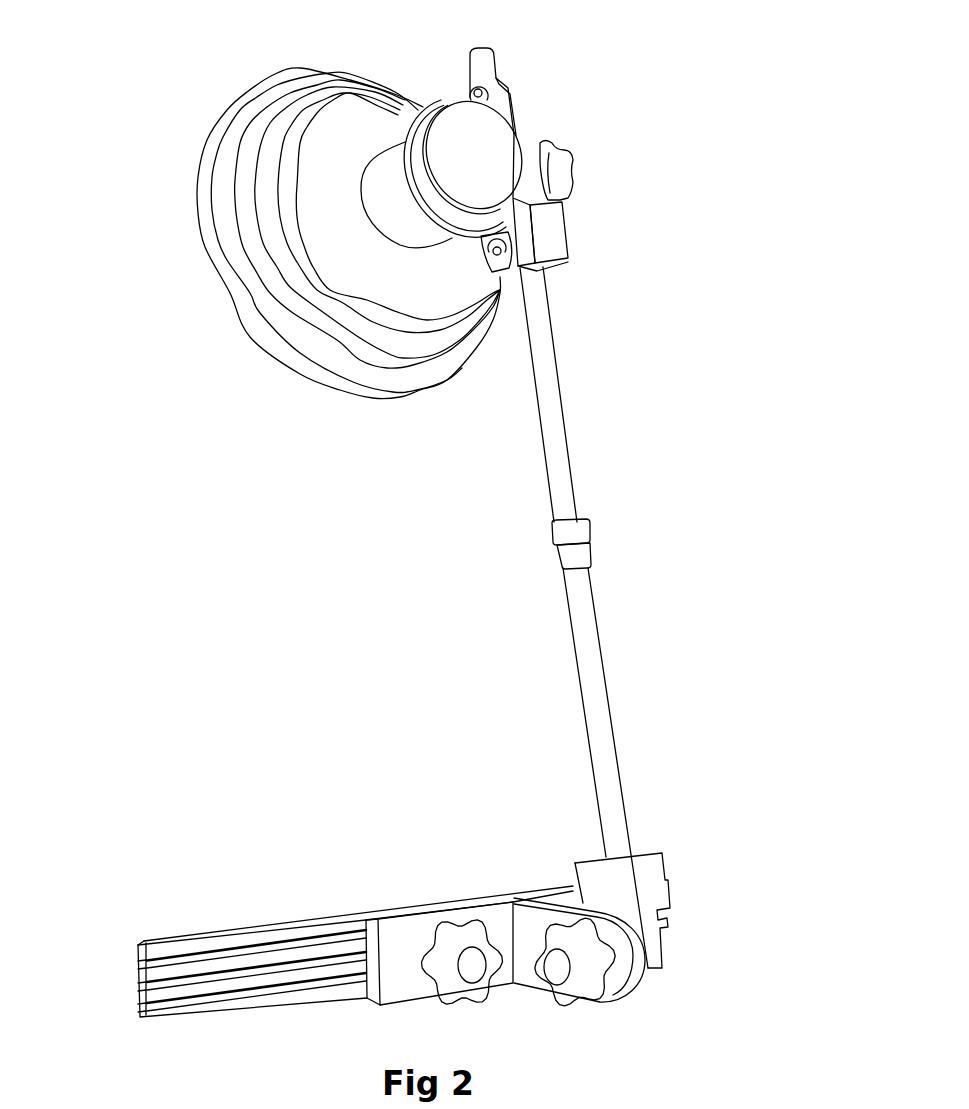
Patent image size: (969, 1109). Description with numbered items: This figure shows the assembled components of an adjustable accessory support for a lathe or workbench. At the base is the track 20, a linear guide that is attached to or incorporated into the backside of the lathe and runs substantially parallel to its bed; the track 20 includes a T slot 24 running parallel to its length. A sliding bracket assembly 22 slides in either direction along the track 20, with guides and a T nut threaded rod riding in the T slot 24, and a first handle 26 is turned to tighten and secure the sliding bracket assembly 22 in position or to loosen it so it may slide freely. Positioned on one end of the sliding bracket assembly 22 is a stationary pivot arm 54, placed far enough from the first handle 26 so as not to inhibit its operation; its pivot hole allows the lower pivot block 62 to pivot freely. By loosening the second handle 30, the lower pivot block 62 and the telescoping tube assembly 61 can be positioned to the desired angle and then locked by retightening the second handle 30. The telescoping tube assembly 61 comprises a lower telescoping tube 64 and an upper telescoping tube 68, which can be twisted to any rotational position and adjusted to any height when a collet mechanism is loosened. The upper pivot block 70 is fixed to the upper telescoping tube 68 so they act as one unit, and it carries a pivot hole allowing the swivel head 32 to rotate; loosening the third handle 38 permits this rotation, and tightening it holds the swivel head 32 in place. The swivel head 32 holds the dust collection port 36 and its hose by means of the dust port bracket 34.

The track 20 is at (182, 950).
The sliding bracket assembly 22 is at (393, 942).
The T slot 24 is at (148, 967).
The first handle 26 is at (478, 963).
The second handle 30 is at (563, 973).
The swivel head 32 is at (482, 65).
The dust port bracket 34 is at (402, 148).
The dust collection port 36 is at (215, 258).
The third handle 38 is at (568, 163).
The stationary pivot arm 54 is at (625, 975).
The telescoping tube assembly 61 is at (620, 580).
The lower pivot block 62 is at (655, 887).
The lower telescoping tube 64 is at (607, 742).
The upper telescoping tube 68 is at (558, 414).
The upper pivot block 70 is at (558, 242).